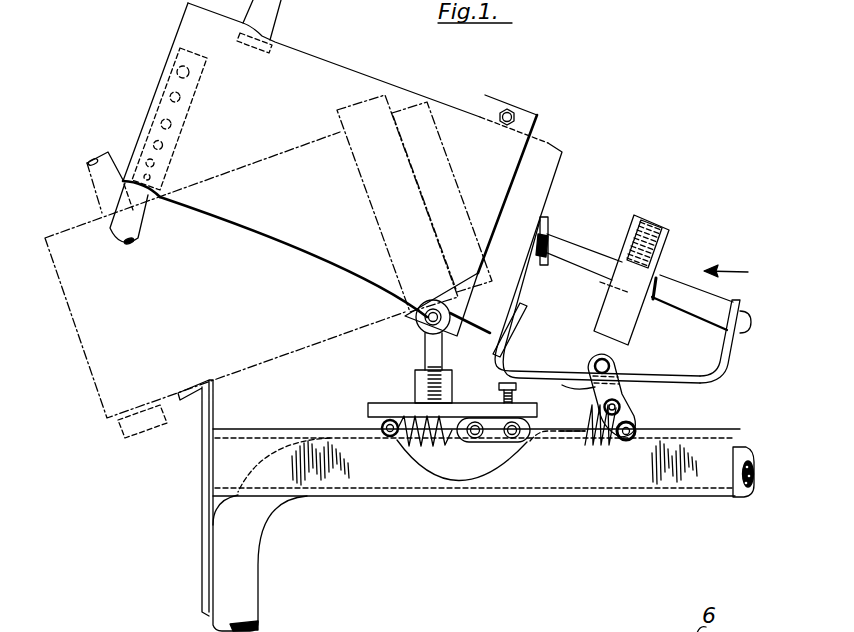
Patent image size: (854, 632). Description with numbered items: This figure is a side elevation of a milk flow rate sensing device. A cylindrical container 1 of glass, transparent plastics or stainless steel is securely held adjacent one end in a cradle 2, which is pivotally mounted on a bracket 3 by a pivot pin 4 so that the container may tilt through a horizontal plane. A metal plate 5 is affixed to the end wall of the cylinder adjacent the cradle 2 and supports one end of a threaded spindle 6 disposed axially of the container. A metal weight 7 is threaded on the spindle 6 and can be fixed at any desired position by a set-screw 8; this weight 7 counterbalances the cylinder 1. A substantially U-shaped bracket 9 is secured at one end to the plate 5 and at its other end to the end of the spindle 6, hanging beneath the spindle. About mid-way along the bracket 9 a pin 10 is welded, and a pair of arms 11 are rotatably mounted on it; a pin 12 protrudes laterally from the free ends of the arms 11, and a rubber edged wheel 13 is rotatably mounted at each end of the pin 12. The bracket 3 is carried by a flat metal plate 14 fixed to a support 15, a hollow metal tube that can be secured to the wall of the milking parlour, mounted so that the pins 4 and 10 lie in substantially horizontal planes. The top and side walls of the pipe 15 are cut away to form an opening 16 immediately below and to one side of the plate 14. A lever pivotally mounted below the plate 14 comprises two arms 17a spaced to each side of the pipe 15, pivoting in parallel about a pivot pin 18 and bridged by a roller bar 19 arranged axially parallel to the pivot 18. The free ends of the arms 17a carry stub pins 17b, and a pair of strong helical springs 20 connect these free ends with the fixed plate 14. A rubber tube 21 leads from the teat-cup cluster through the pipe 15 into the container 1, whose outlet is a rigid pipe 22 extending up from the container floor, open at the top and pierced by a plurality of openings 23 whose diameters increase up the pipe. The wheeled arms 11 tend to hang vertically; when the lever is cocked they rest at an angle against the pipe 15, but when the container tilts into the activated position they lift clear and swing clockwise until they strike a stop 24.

The cylindrical container 1 is at (368, 77).
The cradle 2 is at (533, 122).
The bracket 3 is at (425, 352).
The pivot pin 4 is at (427, 316).
The metal plate 5 is at (528, 285).
The threaded spindle 6 is at (567, 248).
The metal weight 7 is at (667, 252).
The set-screw 8 is at (653, 228).
The U-shaped bracket 9 is at (722, 367).
The pin 10 is at (611, 360).
The arms 11 is at (620, 396).
The pin 12 is at (622, 405).
The rubber edged wheel 13 is at (590, 399).
The flat metal plate 14 is at (374, 402).
The support 15 is at (267, 430).
The opening 16 is at (396, 443).
The arms 17a is at (567, 434).
The stub pins 17b is at (632, 447).
The pivot pin 18 is at (475, 438).
The roller bar 19 is at (524, 440).
The helical springs 20 is at (432, 450).
The rubber tube 21 is at (277, 13).
The rigid pipe 22 is at (175, 152).
The openings 23 is at (190, 73).
The stop 24 is at (561, 385).